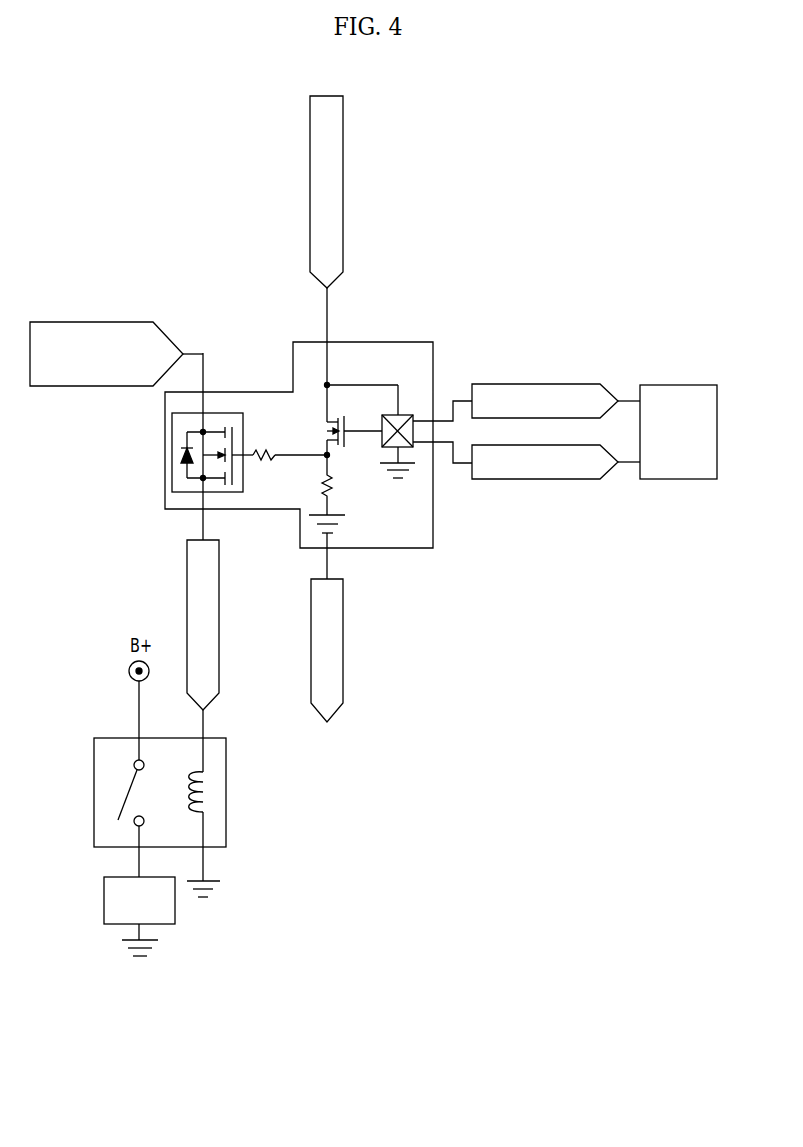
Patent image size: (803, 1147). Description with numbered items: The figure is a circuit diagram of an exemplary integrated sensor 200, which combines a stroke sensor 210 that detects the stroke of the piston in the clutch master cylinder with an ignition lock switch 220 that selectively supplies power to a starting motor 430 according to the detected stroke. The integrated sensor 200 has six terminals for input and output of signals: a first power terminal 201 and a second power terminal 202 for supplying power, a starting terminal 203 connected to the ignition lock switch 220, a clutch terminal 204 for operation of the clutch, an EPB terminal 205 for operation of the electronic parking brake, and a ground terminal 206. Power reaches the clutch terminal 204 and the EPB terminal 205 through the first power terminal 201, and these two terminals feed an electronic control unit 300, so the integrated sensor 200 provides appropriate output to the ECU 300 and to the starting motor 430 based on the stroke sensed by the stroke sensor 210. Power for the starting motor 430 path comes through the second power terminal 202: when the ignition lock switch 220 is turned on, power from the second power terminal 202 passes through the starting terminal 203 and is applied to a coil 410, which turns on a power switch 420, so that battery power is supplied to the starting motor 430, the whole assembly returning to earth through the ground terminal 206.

The integrated sensor 200 is at (399, 338).
The first power terminal 201 is at (343, 207).
The second power terminal 202 is at (112, 322).
The starting terminal 203 is at (219, 582).
The clutch terminal 204 is at (522, 480).
The EPB terminal 205 is at (519, 384).
The ground terminal 206 is at (343, 665).
The stroke sensor 210 is at (412, 415).
The ignition lock switch 220 is at (228, 413).
The electronic control unit 300 is at (673, 385).
The coil 410 is at (207, 792).
The power switch 420 is at (128, 795).
The starting motor 430 is at (104, 901).